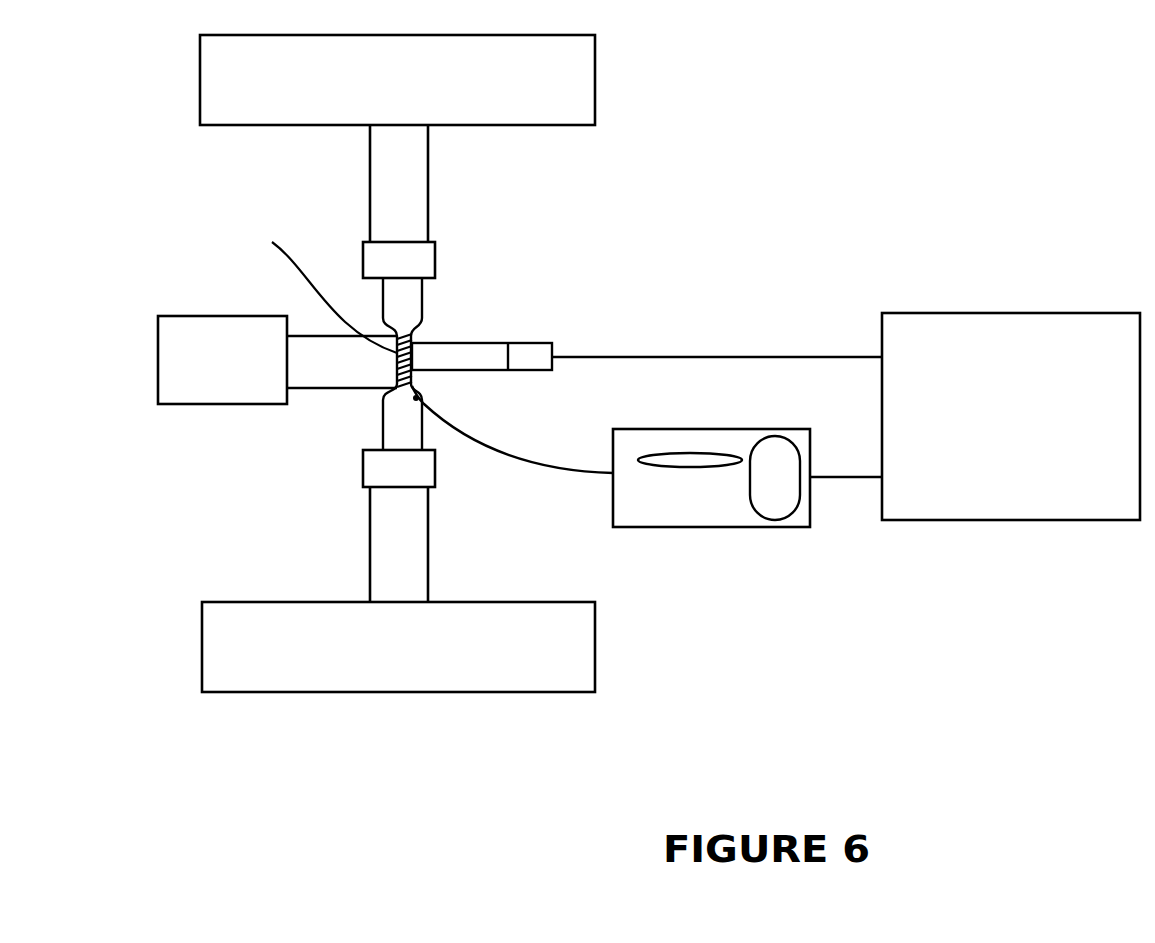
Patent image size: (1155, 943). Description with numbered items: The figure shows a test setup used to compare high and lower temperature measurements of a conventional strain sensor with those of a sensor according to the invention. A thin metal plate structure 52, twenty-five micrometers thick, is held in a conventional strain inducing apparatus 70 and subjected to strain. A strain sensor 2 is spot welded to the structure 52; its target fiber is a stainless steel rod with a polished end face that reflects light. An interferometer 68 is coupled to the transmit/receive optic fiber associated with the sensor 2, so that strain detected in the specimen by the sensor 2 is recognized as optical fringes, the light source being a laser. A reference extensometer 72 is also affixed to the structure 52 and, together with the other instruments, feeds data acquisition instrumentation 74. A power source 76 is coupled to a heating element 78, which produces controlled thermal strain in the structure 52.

The strain sensor 2 is at (408, 372).
The metal plate structure 52 is at (417, 307).
The interferometer 68 is at (685, 527).
The strain inducing apparatus 70 is at (690, 173).
The reference extensometer 72 is at (528, 340).
The data acquisition instrumentation 74 is at (1040, 313).
The power source 76 is at (210, 316).
The heating element 78 is at (314, 285).